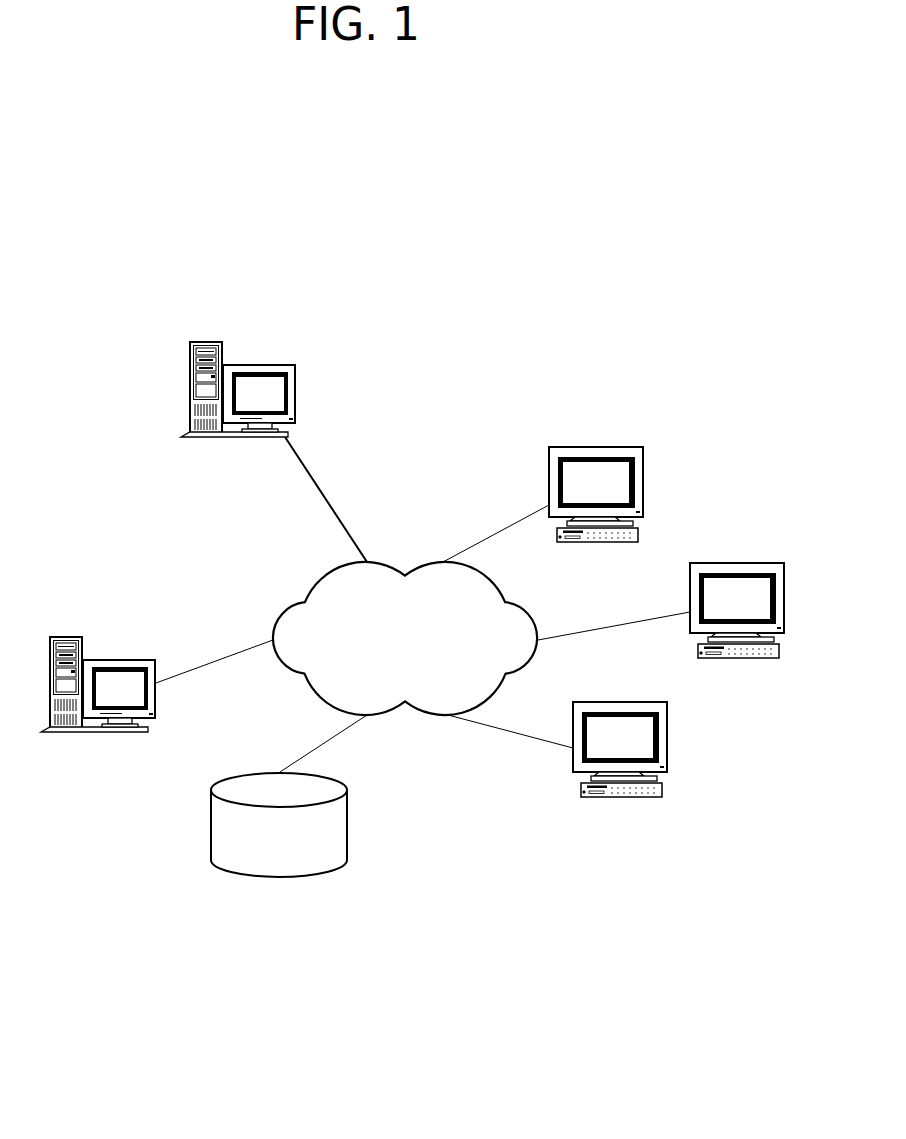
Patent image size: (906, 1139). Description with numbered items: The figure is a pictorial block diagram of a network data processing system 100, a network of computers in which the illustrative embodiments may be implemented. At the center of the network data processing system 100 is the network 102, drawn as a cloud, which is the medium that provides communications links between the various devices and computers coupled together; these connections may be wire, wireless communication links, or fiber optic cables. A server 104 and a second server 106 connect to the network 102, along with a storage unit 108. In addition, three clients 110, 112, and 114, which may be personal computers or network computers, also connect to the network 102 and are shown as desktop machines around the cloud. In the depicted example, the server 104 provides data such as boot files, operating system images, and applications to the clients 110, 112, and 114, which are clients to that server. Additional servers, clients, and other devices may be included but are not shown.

The network data processing system 100 is at (96, 504).
The network 102 is at (422, 660).
The server 104 is at (260, 363).
The server 106 is at (120, 658).
The storage unit 108 is at (278, 877).
The client 110 is at (596, 447).
The client 112 is at (737, 563).
The client 114 is at (668, 748).